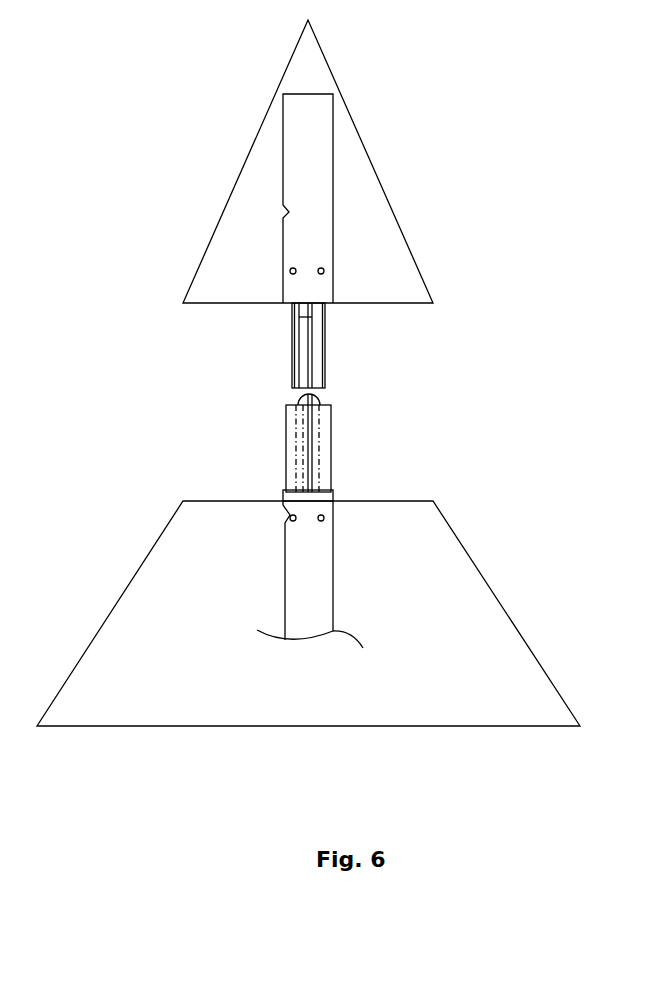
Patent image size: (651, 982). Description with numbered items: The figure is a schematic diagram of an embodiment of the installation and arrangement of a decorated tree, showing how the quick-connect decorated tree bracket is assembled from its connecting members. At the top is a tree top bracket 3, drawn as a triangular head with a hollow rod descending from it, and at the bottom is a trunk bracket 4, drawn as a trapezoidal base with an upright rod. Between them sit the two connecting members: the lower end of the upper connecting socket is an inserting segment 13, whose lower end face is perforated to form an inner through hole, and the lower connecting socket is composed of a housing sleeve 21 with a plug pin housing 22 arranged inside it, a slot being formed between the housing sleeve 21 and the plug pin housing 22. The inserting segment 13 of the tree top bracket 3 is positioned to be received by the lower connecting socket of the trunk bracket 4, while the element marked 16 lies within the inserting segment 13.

The tree top bracket 3 is at (333, 199).
The inserting segment 13 is at (346, 345).
The connector inner shaft 16 is at (318, 372).
The plug pin housing 22 is at (319, 438).
The housing sleeve 21 is at (361, 447).
The trunk bracket 4 is at (333, 631).